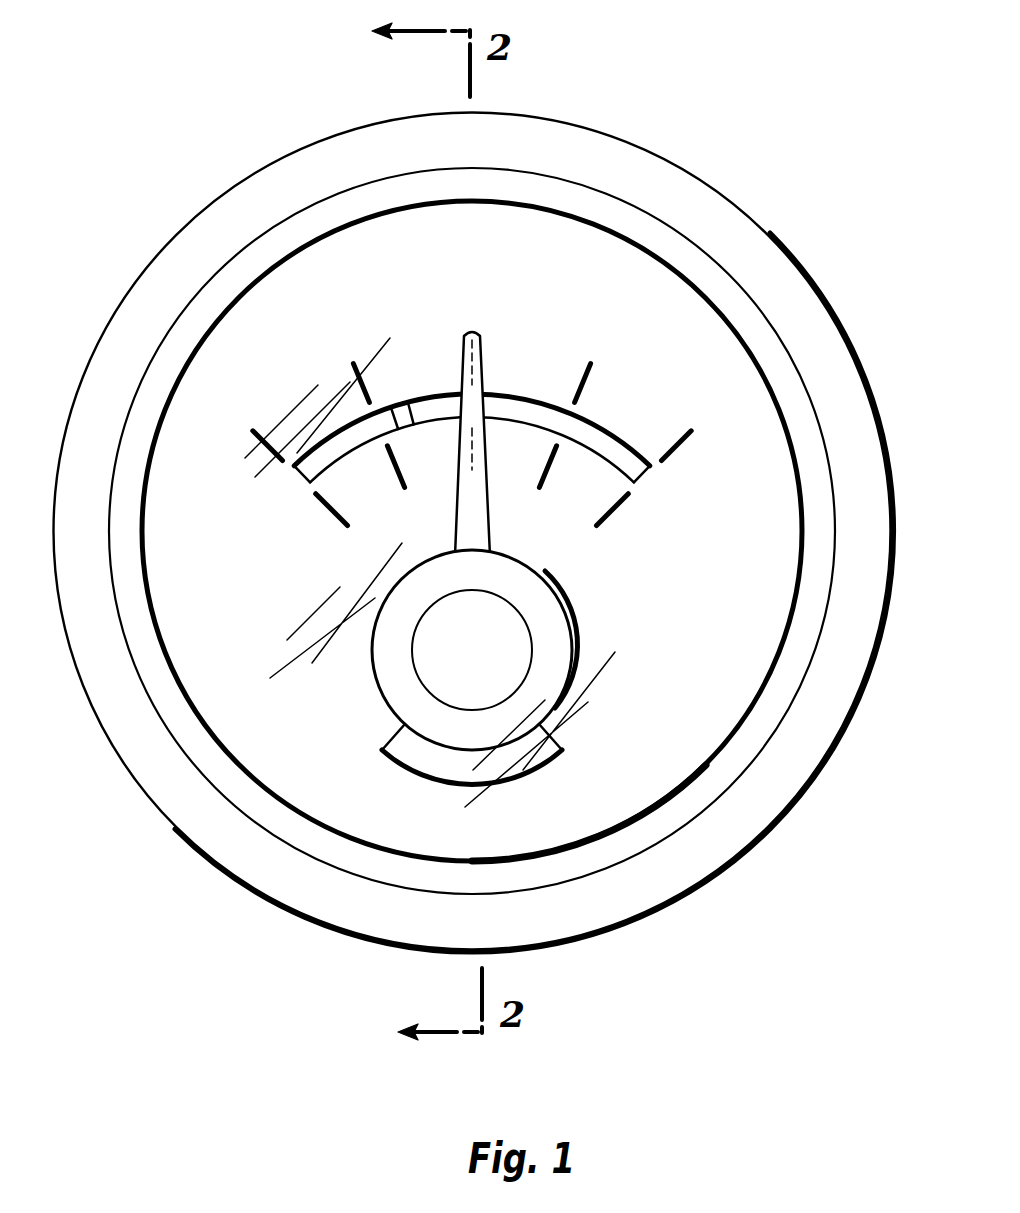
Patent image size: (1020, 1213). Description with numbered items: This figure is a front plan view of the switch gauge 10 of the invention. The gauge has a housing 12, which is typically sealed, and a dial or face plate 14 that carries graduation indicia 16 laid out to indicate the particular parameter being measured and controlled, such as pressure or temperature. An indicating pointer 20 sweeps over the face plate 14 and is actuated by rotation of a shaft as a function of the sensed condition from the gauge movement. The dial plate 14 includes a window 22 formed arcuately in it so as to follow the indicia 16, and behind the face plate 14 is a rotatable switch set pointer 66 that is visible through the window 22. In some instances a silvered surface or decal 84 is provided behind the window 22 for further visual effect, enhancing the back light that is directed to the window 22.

The switch gauge 10 is at (653, 126).
The housing 12 is at (734, 203).
The dial or face plate 14 is at (715, 581).
The graduation indicia 16 is at (594, 306).
The indicating pointer 20 is at (471, 394).
The window 22 is at (570, 432).
The rotatable switch set pointer 66 is at (405, 417).
The silvered surface or decal 84 is at (347, 445).